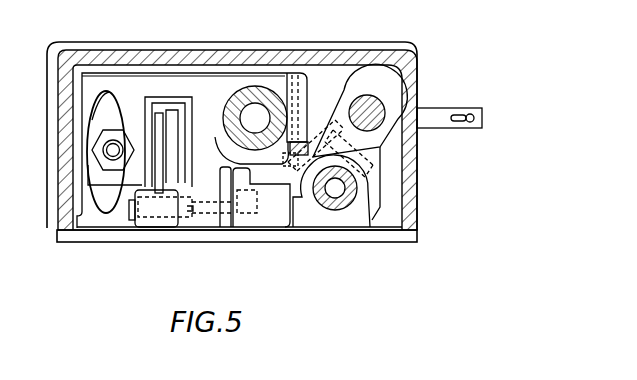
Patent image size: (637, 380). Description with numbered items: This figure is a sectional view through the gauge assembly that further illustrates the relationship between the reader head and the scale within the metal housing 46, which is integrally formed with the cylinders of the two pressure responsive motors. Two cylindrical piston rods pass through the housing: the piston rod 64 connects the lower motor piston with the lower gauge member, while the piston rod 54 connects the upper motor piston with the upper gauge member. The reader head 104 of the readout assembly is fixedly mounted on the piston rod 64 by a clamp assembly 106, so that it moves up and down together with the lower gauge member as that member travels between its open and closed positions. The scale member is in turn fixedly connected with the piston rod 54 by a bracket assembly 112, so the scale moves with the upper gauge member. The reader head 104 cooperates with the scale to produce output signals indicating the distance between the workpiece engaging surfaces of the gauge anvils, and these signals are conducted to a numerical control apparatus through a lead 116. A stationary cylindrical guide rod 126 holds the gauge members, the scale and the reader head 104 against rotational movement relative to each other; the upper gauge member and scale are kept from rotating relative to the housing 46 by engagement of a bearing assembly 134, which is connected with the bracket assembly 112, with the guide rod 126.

The housing 46 is at (259, 1).
The reader head 104 is at (128, 86).
The clamp assembly 106 is at (285, 78).
The piston rod 64 is at (283, 100).
The piston rod 54 is at (372, 118).
The lead 116 is at (112, 216).
The bracket assembly 112 is at (203, 217).
The guide rod 126 is at (343, 208).
The bearing assembly 134 is at (362, 207).